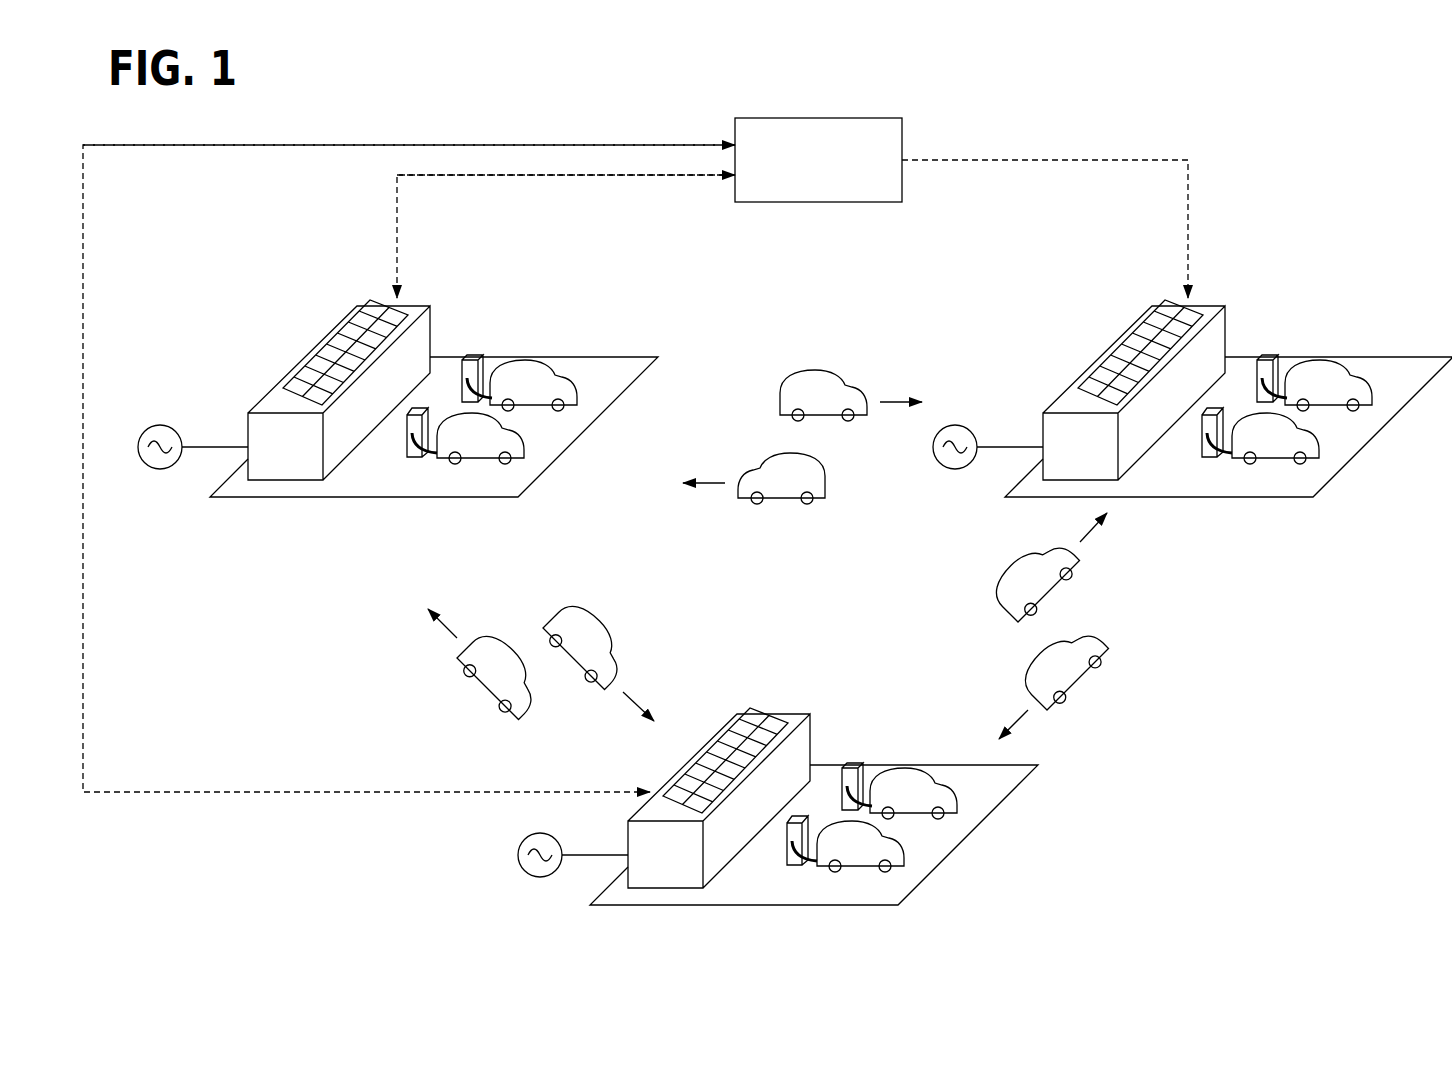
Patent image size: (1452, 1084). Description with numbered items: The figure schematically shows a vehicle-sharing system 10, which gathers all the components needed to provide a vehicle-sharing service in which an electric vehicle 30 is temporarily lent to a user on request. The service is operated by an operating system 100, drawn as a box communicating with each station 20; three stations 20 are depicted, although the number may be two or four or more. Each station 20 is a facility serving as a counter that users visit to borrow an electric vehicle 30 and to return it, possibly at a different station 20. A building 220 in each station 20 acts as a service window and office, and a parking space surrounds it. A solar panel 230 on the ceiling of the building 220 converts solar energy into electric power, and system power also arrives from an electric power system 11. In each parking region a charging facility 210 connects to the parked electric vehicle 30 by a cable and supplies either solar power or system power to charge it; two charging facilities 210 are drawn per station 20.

The vehicle-sharing system 10 is at (1302, 196).
The electric power system 11 is at (160, 425).
The station 20 is at (505, 355).
The electric vehicle 30 is at (548, 357).
The operating system 100 is at (873, 118).
The charging facility 210 is at (470, 353).
The building 220 is at (432, 320).
The solar panel 230 is at (377, 305).